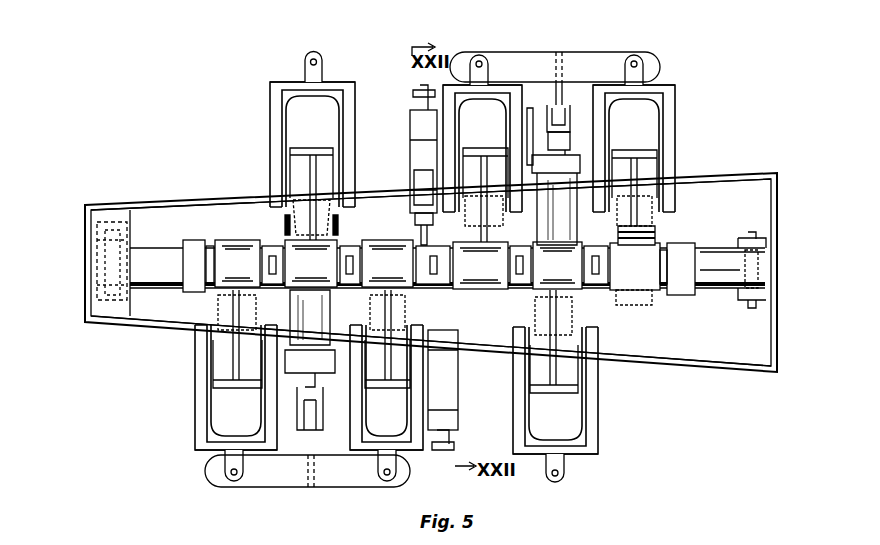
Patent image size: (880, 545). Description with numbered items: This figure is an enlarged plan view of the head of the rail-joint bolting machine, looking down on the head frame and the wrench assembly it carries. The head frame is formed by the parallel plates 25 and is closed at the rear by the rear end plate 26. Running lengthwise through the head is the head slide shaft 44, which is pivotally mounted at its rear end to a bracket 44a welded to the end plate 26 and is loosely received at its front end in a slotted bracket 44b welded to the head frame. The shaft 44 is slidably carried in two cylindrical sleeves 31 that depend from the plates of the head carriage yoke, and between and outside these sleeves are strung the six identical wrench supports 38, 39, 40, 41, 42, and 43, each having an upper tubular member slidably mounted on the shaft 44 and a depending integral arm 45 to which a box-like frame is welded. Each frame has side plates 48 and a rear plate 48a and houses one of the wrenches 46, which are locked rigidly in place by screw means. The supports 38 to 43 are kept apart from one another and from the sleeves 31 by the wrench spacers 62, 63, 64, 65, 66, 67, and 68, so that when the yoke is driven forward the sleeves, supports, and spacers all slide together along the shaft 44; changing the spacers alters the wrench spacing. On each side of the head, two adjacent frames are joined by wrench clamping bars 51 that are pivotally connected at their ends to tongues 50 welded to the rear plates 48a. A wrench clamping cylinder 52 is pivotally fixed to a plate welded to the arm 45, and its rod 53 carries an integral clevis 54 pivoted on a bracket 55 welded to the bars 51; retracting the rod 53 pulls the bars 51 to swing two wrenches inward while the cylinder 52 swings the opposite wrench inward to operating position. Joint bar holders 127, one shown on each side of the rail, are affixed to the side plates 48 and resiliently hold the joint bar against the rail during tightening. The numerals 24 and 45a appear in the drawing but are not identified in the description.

The actuator housing 24 is at (412, 175).
The plates of the head frame 25 is at (184, 198).
The rear end plate 26 is at (84, 280).
The cylindrical sleeves 31 is at (194, 241).
The wrench support 38 is at (258, 258).
The wrench support 39 is at (334, 260).
The wrench support 40 is at (412, 260).
The wrench support 41 is at (506, 262).
The wrench support 42 is at (580, 262).
The wrench support 43 is at (658, 262).
The head slide shaft 44 is at (718, 248).
The bracket 44a is at (767, 243).
The slotted bracket 44b is at (86, 308).
The depending integral arm 45 is at (288, 170).
The piston rod 45a is at (502, 158).
The wrenches 46 is at (466, 117).
The side plates 48 is at (677, 118).
The rear plate 48a is at (660, 87).
The tongues 50 is at (475, 56).
The wrench clamping bars 51 is at (532, 54).
The wrench clamping cylinder 52 is at (446, 269).
The rod 53 is at (575, 135).
The clevis 54 is at (548, 113).
The bracket 55 is at (566, 56).
The wrench spacer 62 is at (214, 290).
The wrench spacer 63 is at (281, 290).
The wrench spacer 64 is at (350, 290).
The wrench spacer 65 is at (438, 290).
The wrench spacer 66 is at (520, 291).
The wrench spacer 67 is at (590, 291).
The wrench spacer 68 is at (664, 293).
The joint bar holder 127 is at (410, 144).